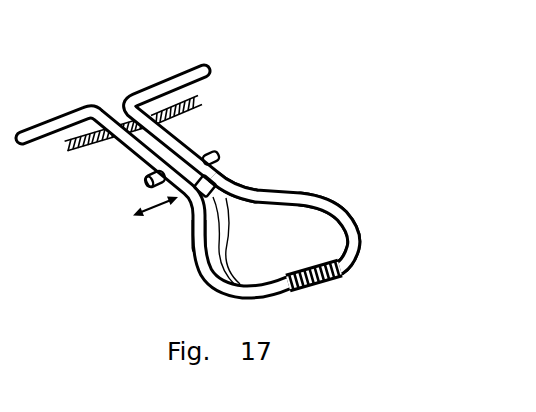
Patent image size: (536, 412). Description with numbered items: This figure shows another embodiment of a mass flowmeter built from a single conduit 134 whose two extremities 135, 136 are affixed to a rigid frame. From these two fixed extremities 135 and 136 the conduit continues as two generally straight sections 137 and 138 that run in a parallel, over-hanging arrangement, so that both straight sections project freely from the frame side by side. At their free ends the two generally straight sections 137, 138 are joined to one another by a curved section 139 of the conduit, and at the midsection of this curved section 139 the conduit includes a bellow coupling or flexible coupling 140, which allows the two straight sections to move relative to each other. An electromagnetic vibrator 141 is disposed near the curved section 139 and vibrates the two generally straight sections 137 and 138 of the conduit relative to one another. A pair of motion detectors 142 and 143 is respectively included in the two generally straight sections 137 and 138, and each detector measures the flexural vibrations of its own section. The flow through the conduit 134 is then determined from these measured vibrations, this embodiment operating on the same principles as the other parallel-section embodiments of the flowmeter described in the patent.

The conduit 134 is at (287, 189).
The extremity 135 is at (108, 146).
The extremity 136 is at (190, 122).
The generally straight section 137 is at (135, 162).
The generally straight section 138 is at (192, 139).
The curved section 139 is at (353, 233).
The flexible coupling 140 is at (307, 288).
The electromagnetic vibrator 141 is at (183, 238).
The motion detector 142 is at (133, 184).
The motion detector 143 is at (222, 155).